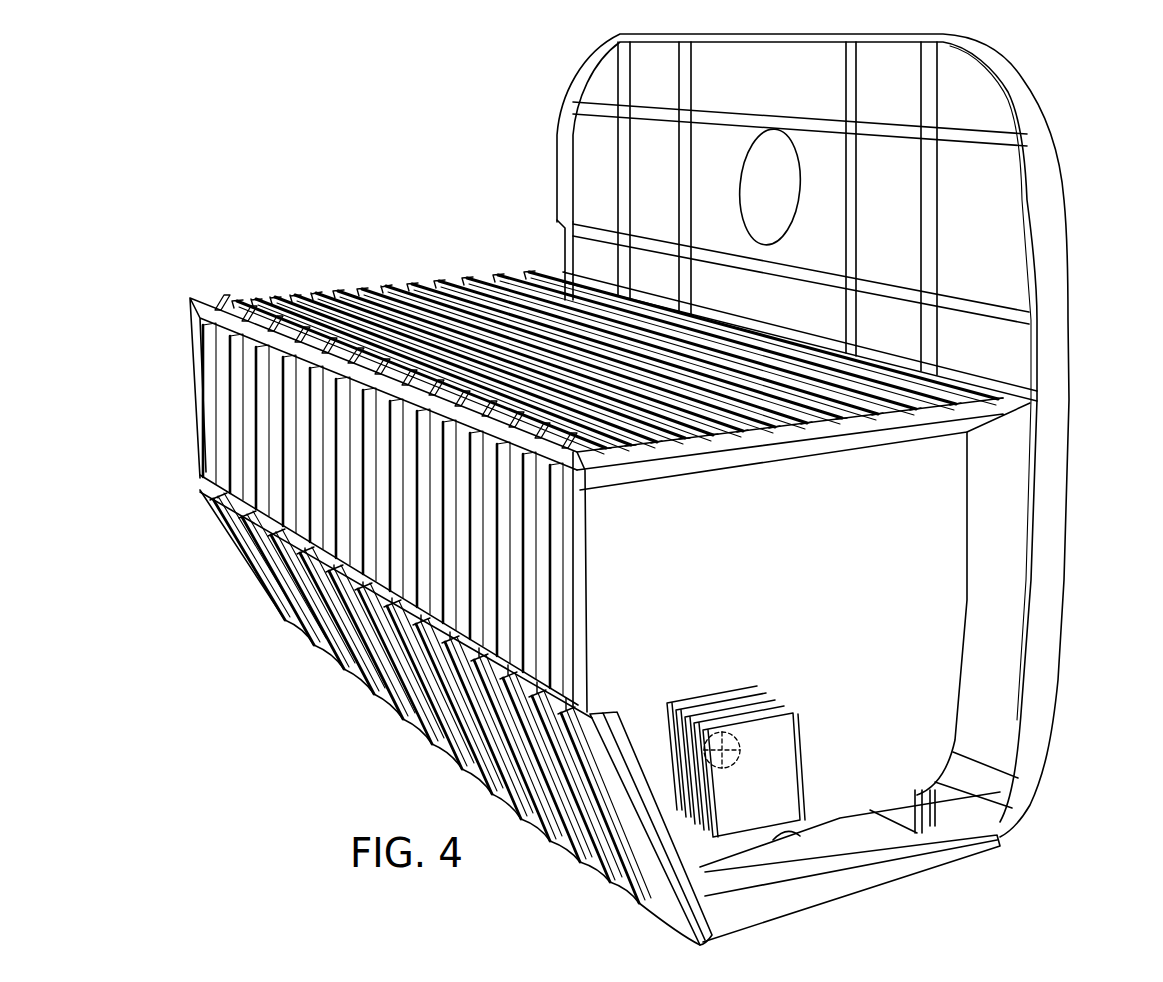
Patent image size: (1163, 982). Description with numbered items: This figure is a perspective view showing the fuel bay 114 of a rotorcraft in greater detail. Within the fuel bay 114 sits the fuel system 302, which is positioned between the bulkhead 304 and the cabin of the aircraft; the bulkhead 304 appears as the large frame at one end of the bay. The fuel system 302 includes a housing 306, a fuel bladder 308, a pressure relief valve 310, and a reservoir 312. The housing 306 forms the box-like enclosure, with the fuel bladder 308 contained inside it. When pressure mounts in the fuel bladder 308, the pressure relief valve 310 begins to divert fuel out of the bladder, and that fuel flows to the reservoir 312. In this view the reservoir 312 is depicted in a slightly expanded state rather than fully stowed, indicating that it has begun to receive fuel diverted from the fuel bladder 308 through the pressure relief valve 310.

The fuel bay 114 is at (1073, 773).
The fuel system 302 is at (996, 685).
The bulkhead 304 is at (1063, 220).
The housing 306 is at (247, 567).
The fuel bladder 308 is at (968, 598).
The pressure relief valve 310 is at (748, 727).
The reservoir 312 is at (685, 700).